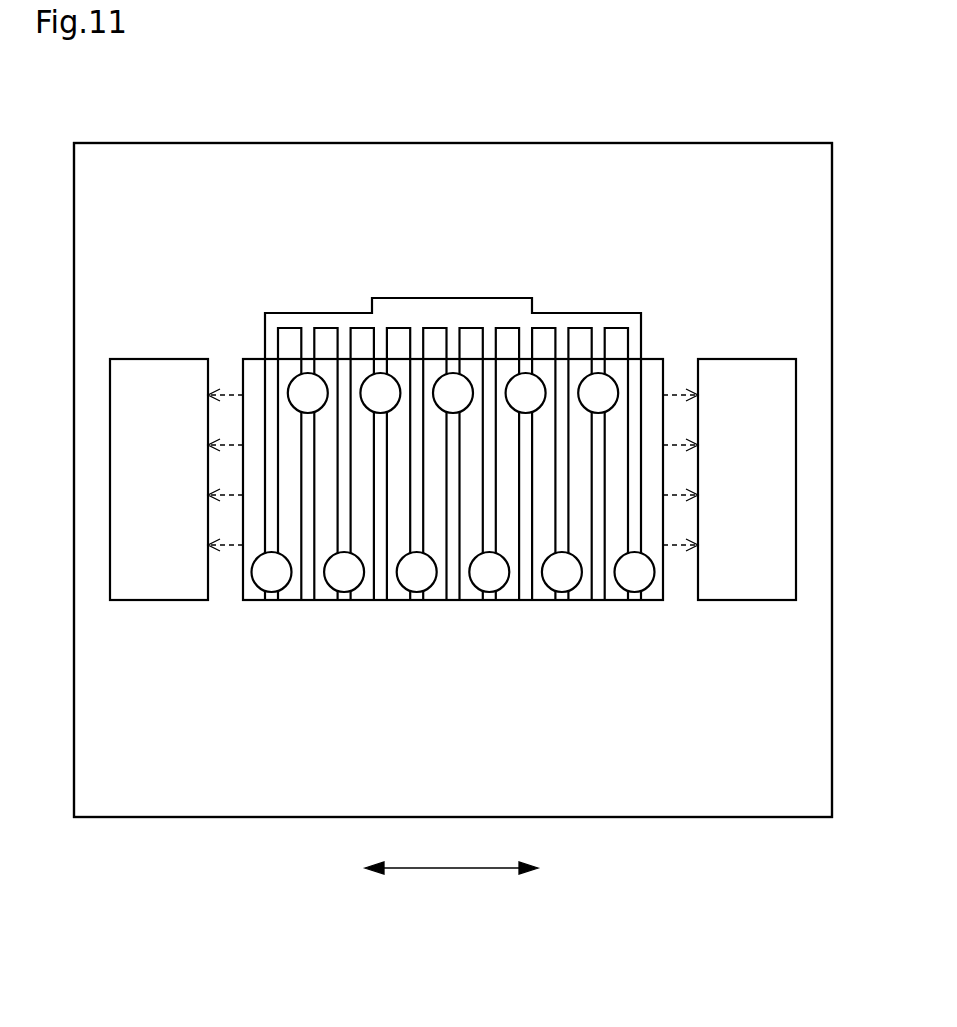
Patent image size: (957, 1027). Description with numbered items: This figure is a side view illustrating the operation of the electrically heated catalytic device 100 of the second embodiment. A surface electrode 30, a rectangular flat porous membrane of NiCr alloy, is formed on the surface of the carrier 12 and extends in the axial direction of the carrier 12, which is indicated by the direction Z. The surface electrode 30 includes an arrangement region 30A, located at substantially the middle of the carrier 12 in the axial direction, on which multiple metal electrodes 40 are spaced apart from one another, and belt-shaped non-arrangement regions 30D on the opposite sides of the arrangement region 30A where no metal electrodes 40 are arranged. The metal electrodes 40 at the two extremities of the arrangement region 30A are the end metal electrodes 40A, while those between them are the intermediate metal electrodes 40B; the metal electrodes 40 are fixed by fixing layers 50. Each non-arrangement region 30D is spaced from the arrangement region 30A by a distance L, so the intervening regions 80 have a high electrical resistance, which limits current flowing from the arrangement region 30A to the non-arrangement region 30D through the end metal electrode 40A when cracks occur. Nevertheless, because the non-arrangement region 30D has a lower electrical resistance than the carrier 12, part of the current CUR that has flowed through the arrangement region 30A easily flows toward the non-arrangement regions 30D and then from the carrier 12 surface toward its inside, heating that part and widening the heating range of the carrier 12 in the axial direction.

The electrically heated catalytic device 100 is at (232, 130).
The carrier 12 is at (805, 213).
The surface electrode 30 is at (495, 556).
The arrangement region 30A is at (663, 627).
The non-arrangement region 30D is at (208, 627).
The metal electrode 40 is at (459, 480).
The end metal electrode 40A is at (272, 343).
The intermediate metal electrode 40B is at (506, 517).
The fixing layer 50 is at (640, 572).
The region 80 is at (243, 627).
The current CUR is at (228, 443).
The Z direction Z is at (451, 854).